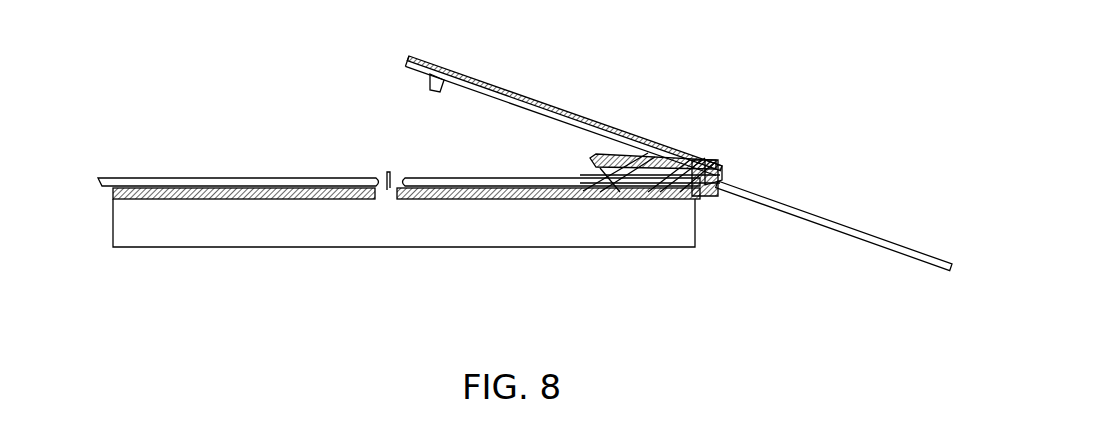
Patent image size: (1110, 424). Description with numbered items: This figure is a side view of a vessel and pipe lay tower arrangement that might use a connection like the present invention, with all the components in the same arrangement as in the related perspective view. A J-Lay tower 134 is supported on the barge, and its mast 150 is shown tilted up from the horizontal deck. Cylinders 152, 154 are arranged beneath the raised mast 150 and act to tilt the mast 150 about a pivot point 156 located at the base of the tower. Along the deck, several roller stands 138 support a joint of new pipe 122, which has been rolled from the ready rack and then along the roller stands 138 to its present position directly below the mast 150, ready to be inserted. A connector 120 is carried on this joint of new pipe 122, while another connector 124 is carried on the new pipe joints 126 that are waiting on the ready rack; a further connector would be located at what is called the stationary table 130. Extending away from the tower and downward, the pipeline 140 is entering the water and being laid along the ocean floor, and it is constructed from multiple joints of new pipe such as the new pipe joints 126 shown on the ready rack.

The connector 120 is at (407, 197).
The joint of new pipe 122 is at (461, 197).
The connector 124 is at (97, 180).
The new pipe joints 126 is at (168, 186).
The stationary table 130 is at (717, 172).
The J-Lay tower 134 is at (570, 103).
The roller stands 138 is at (258, 197).
The pipeline 140 is at (792, 208).
The mast 150 is at (512, 92).
The cylinder 152 is at (582, 172).
The cylinder 154 is at (650, 168).
The pivot point 156 is at (690, 193).